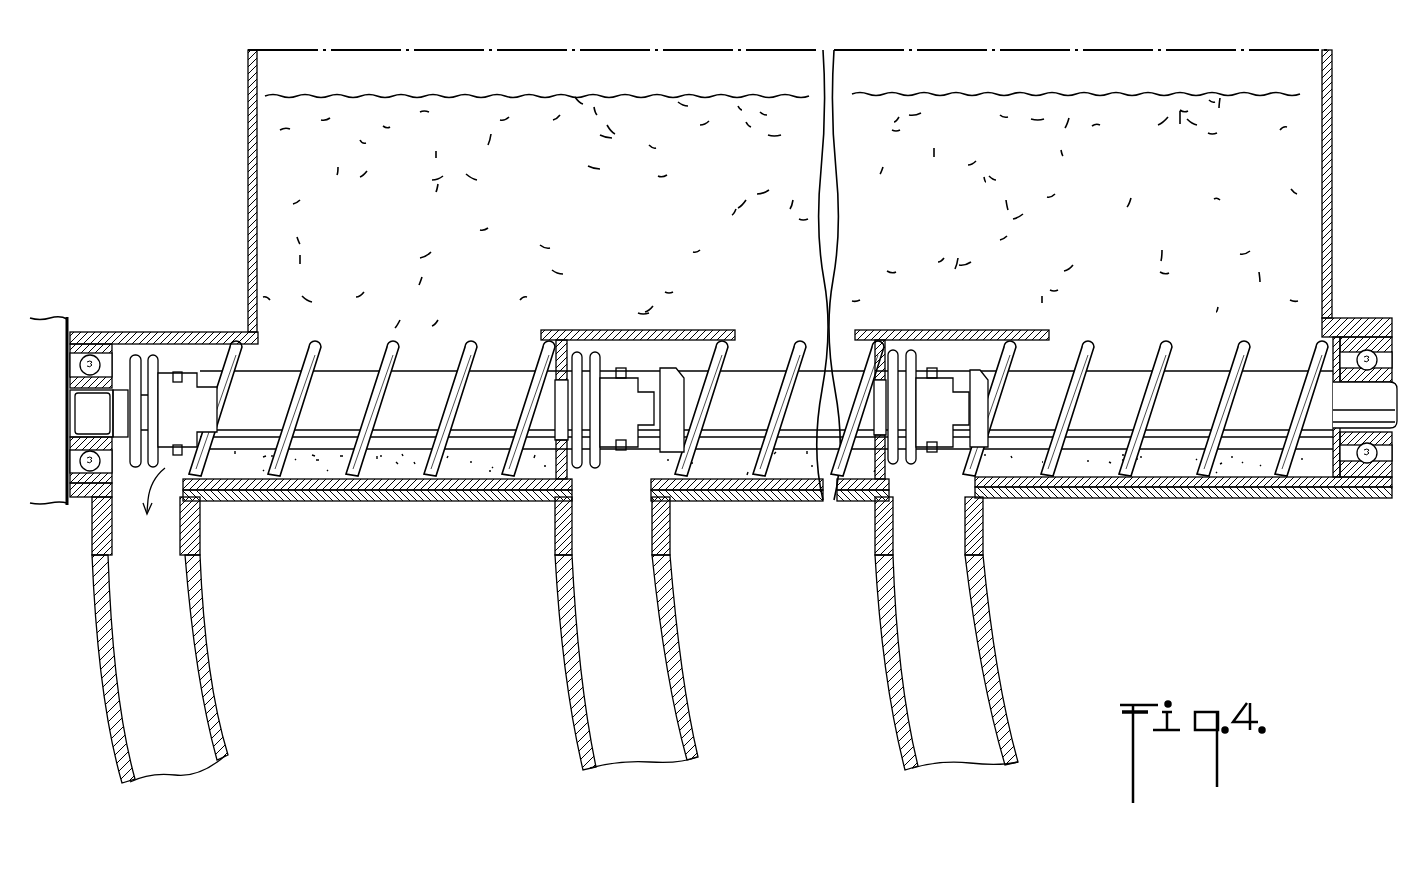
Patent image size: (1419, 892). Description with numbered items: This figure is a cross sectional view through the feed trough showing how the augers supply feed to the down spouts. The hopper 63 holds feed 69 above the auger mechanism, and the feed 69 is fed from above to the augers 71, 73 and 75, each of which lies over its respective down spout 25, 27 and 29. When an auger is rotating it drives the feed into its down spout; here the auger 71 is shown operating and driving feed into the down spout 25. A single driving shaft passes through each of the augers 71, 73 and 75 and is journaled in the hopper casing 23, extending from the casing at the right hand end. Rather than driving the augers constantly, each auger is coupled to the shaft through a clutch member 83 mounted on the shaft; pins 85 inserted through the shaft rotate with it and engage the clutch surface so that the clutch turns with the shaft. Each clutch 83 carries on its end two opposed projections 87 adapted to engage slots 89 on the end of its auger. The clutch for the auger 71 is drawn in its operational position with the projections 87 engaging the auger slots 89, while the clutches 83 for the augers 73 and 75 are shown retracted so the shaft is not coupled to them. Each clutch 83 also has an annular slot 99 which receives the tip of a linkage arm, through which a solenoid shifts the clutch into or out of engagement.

The hopper casing 23 is at (135, 330).
The down spout 25 is at (205, 622).
The down spout 27 is at (680, 632).
The down spout 29 is at (990, 628).
The hopper 63 is at (248, 241).
The feed 69 is at (604, 196).
The auger 71 is at (462, 340).
The auger 73 is at (793, 341).
The auger 75 is at (1172, 340).
The clutch member 83 is at (155, 345).
The pin 85 is at (622, 374).
The projection 87 is at (200, 412).
The slot 89 is at (196, 432).
The annular slot 99 is at (581, 455).